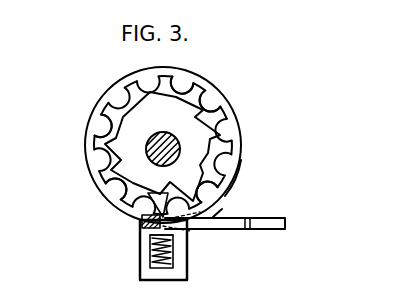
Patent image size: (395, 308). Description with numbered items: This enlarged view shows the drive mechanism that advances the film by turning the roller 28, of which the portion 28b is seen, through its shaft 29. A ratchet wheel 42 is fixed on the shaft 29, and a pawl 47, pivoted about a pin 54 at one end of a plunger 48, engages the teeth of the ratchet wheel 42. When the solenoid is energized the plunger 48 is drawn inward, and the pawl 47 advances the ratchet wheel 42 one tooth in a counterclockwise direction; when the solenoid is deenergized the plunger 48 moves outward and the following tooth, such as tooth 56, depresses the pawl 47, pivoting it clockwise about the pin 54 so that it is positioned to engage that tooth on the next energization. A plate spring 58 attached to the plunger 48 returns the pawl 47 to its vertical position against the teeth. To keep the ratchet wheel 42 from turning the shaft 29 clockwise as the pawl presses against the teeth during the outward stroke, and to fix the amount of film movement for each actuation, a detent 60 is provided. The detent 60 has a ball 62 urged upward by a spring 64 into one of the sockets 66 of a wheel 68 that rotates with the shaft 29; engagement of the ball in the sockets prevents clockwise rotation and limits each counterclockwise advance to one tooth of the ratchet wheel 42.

The roller 28 is at (243, 140).
The roller portion 28b is at (244, 172).
The shaft 29 is at (171, 135).
The ratchet wheel 42 is at (123, 123).
The pawl 47 is at (148, 218).
The plunger 48 is at (275, 219).
The pin 54 is at (143, 251).
The tooth 56 is at (104, 195).
The plate spring 58 is at (175, 237).
The detent 60 is at (143, 257).
The ball 62 is at (213, 217).
The spring 64 is at (178, 250).
The sockets 66 is at (178, 78).
The wheel 68 is at (104, 118).